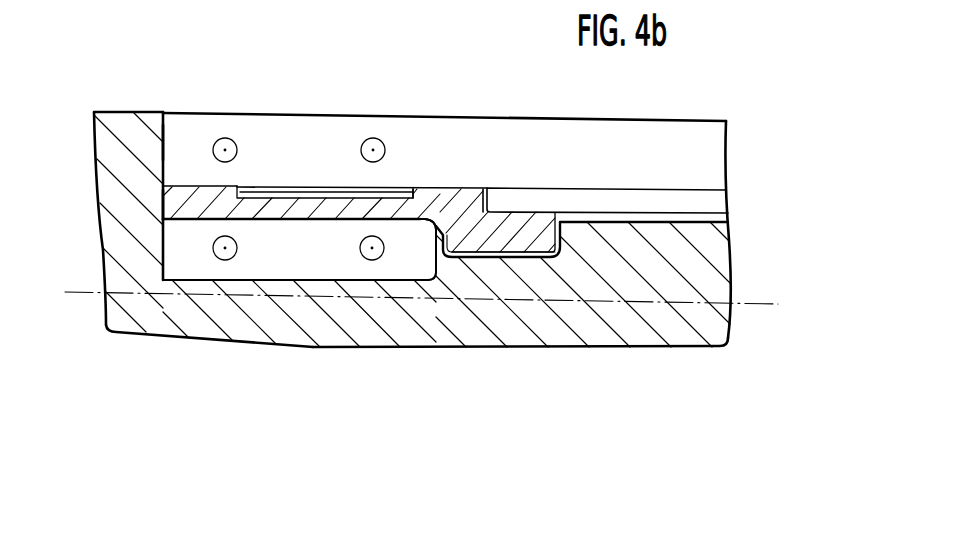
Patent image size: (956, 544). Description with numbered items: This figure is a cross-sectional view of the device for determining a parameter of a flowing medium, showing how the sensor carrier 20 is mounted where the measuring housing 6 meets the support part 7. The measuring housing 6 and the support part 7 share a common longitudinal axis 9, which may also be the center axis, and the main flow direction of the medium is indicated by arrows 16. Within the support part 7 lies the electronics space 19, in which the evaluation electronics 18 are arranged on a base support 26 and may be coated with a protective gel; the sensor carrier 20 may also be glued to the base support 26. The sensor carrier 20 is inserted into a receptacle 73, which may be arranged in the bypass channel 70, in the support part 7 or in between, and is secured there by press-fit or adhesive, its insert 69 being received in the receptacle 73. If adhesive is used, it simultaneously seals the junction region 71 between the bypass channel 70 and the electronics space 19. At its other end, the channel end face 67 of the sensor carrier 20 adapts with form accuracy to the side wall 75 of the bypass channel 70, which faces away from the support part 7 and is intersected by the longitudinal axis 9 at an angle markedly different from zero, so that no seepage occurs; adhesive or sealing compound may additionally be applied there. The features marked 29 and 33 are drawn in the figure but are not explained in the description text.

The measuring housing 6 is at (157, 316).
The support part 7 is at (681, 328).
The longitudinal axis 9 is at (745, 304).
The arrows 16 is at (228, 148).
The evaluation electronics 18 is at (731, 204).
The electronics space 19 is at (663, 178).
The sensor carrier 20 is at (463, 200).
The base support 26 is at (724, 245).
The step edge 29 is at (412, 197).
The insert layer 33 is at (392, 194).
The channel end face 67 is at (158, 206).
The insert 69 is at (503, 238).
The bypass channel 70 is at (297, 260).
The junction region 71 is at (414, 260).
The receptacle 73 is at (548, 258).
The side wall 75 is at (172, 143).